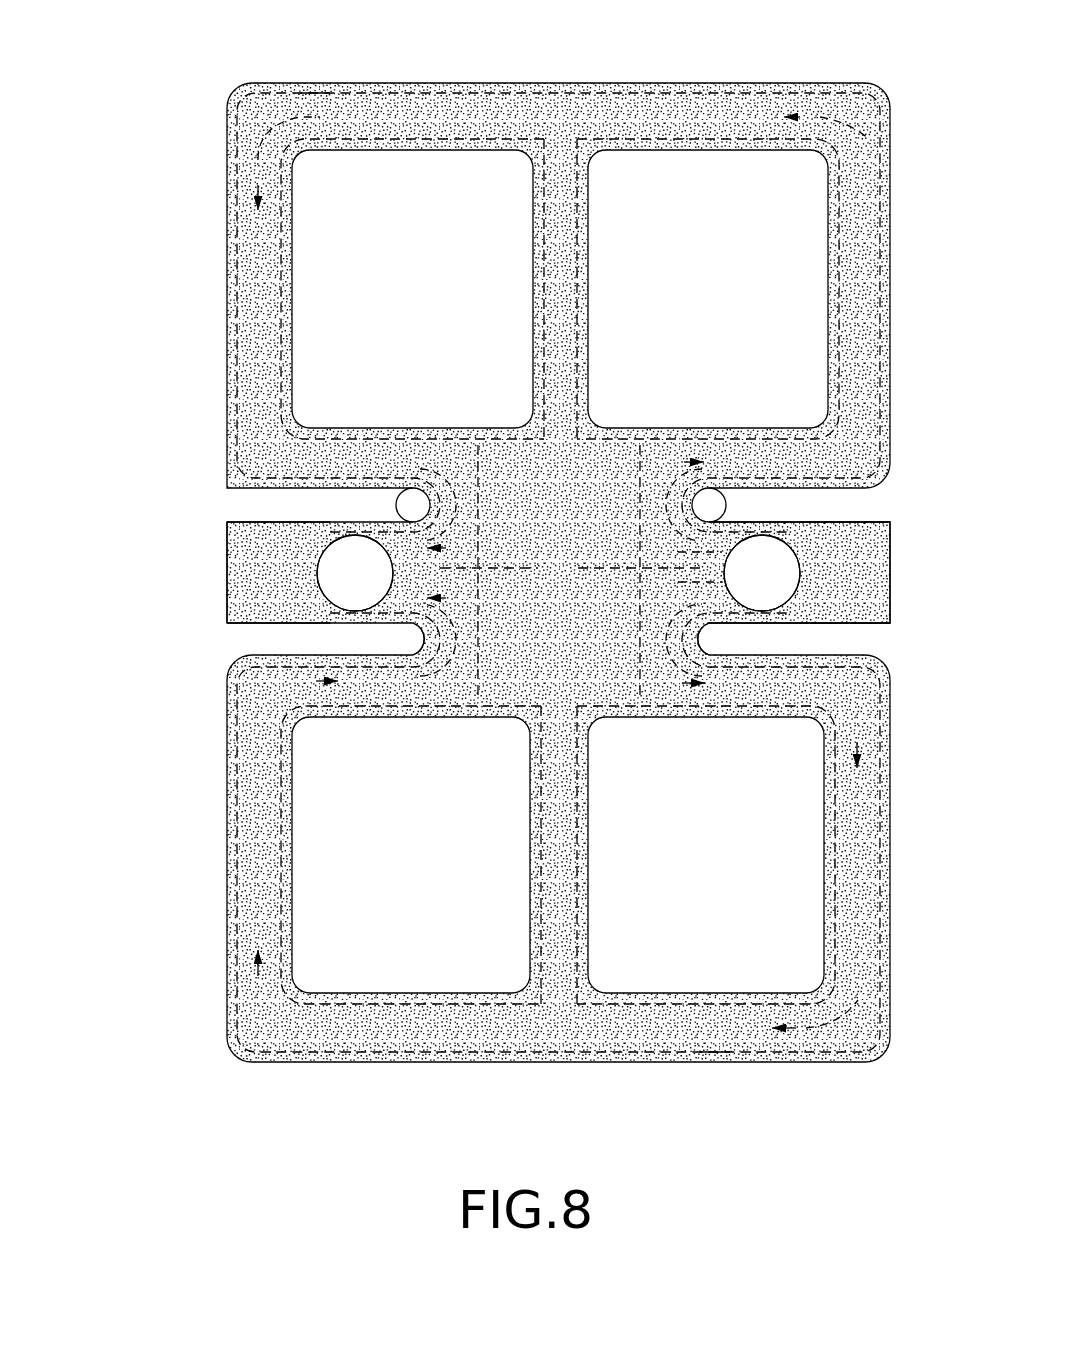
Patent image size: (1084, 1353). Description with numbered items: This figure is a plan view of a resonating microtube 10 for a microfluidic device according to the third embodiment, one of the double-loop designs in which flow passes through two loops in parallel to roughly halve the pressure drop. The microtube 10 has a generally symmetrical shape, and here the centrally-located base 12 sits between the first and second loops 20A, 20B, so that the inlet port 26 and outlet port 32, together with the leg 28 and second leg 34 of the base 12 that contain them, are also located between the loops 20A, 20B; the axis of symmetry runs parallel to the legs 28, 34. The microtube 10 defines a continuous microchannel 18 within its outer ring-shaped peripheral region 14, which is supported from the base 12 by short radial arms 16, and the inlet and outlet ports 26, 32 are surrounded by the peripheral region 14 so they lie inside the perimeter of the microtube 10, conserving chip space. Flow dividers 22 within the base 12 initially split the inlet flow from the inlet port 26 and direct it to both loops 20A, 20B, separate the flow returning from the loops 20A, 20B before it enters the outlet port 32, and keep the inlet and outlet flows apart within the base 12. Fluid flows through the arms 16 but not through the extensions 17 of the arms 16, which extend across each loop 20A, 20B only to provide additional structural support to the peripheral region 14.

The microtube 10 is at (302, 58).
The base 12 is at (898, 617).
The peripheral region 14 is at (622, 80).
The radial arms 16 is at (421, 500).
The extensions 17 is at (533, 258).
The microchannel 18 is at (428, 84).
The first loop 20A is at (160, 830).
The second loop 20B is at (172, 262).
The flow dividers 22 is at (538, 500).
The inlet port 26 is at (787, 573).
The leg 28 is at (820, 533).
The outlet port 32 is at (332, 577).
The second leg 34 is at (232, 532).